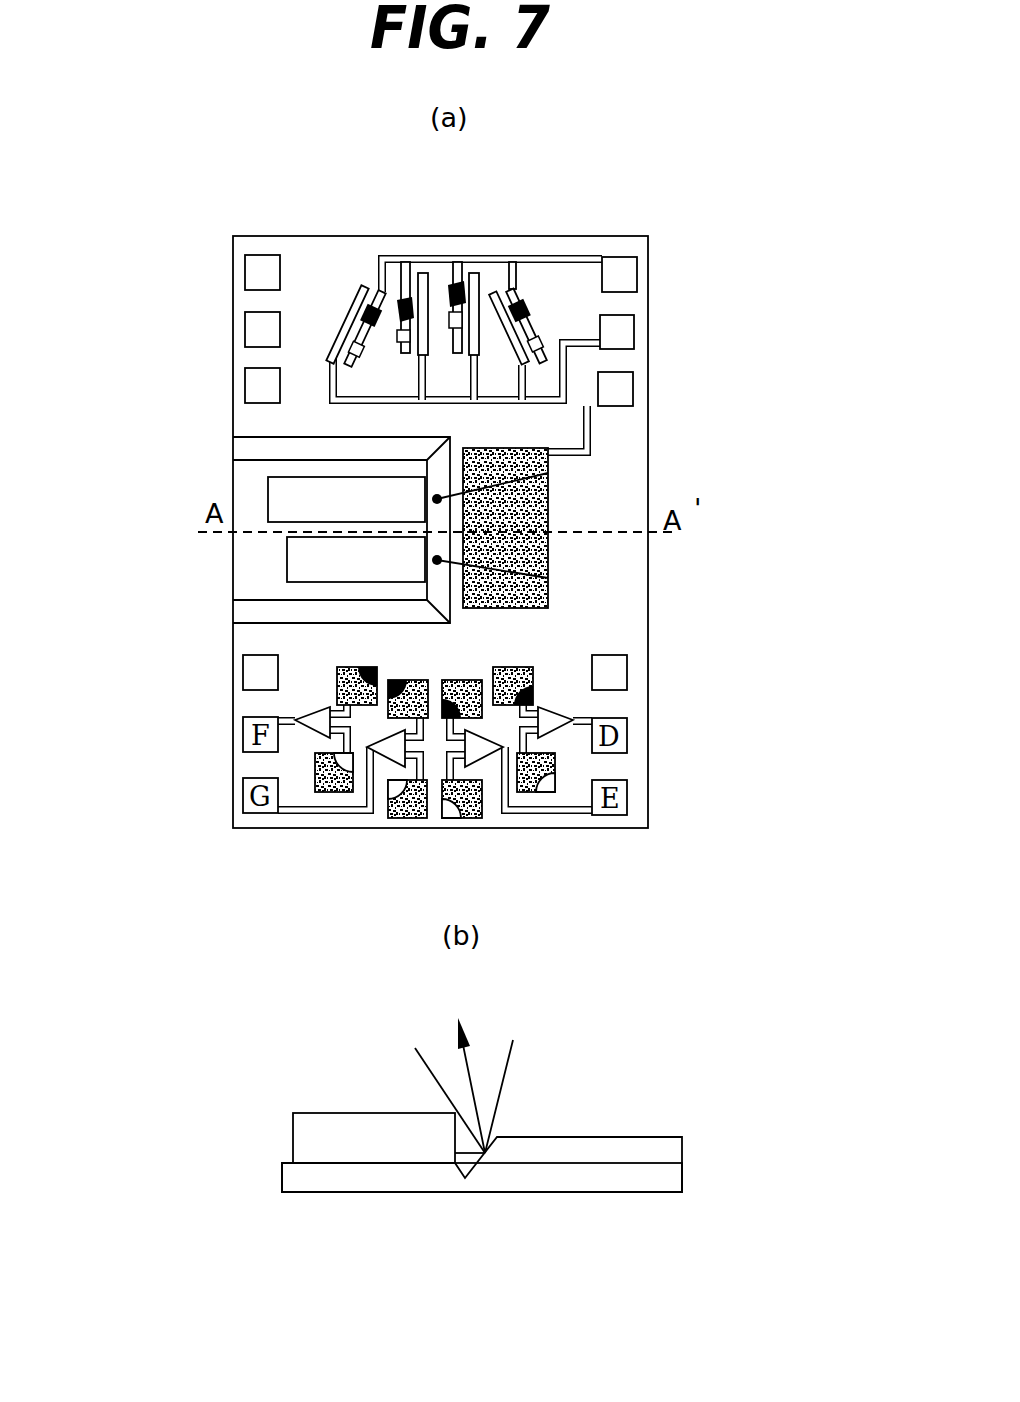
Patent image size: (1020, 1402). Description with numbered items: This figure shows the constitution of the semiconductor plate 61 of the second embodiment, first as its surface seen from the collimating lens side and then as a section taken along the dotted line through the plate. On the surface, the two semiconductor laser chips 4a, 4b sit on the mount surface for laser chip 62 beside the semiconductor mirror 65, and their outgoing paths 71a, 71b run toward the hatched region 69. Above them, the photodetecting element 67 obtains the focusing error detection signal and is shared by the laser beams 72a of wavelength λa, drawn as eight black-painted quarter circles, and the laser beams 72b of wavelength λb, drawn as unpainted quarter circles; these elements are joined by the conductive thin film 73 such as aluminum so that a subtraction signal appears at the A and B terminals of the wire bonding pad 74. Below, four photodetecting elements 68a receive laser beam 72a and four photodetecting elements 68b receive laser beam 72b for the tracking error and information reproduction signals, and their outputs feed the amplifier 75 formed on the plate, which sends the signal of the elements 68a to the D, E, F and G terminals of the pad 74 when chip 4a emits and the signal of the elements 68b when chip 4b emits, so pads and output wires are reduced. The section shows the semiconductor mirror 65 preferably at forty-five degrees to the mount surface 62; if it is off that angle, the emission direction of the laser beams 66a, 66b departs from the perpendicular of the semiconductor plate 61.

The semiconductor plate 61 is at (233, 245).
The mount surface for laser chip 62 is at (258, 578).
The semiconductor mirror 65 is at (440, 472).
The photodetecting element 67 is at (352, 292).
The conductive thin film 73 is at (404, 262).
The laser beam of wavelength λa 72a is at (458, 290).
The laser beam of wavelength λb 72b is at (545, 290).
The pad 74 is at (637, 312).
The semiconductor laser chip 4a is at (268, 500).
The semiconductor laser chip 4b is at (287, 557).
The laser beam path 71a is at (548, 473).
The laser beam path 71b is at (548, 578).
The hologram element 69 is at (548, 608).
The photodetecting elements 68a is at (532, 668).
The photodetecting elements 68b is at (555, 768).
The amplifier 75 is at (568, 712).
The laser beam 66a is at (455, 1032).
The laser beam 66b is at (397, 1054).